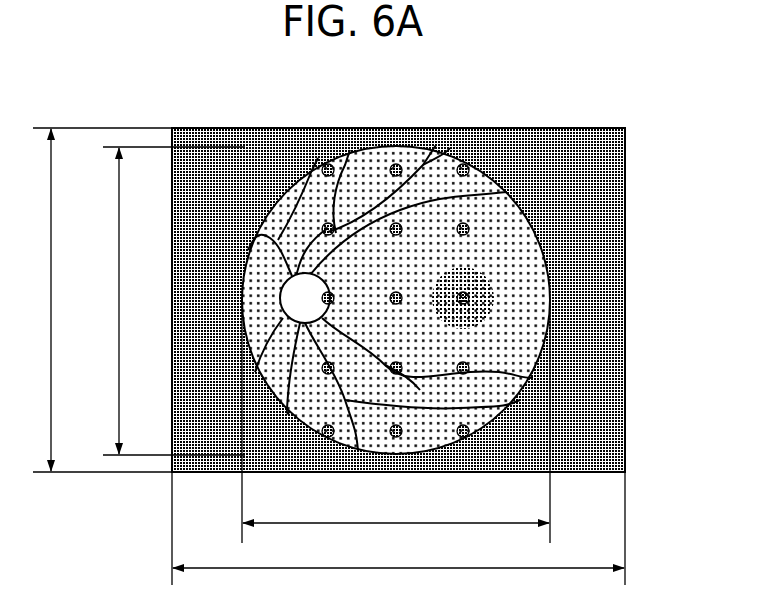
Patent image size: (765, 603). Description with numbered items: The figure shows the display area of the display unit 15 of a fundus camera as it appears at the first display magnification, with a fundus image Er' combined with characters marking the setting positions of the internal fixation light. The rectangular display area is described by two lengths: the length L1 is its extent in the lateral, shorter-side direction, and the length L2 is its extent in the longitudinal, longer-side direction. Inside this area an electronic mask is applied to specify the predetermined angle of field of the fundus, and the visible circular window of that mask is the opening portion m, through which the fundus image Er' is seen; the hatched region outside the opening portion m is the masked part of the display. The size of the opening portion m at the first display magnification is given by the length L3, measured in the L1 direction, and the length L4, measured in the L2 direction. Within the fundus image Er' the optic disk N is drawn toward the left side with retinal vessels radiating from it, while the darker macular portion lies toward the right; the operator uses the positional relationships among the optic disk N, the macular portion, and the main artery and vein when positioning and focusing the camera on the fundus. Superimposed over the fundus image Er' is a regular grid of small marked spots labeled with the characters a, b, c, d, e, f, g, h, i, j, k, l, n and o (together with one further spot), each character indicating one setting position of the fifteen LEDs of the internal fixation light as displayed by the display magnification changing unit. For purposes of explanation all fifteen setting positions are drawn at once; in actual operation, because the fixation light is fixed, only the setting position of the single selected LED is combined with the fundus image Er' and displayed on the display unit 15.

The display unit 15 is at (561, 128).
The opening portion m is at (494, 178).
The fundus image Er' is at (558, 280).
The optic disk N is at (292, 300).
The length L1 is at (94, 300).
The length L2 is at (398, 528).
The length L3 is at (165, 301).
The length L4 is at (396, 421).
The character a is at (332, 185).
The character b is at (396, 187).
The character c is at (467, 182).
The character d is at (331, 245).
The character e is at (396, 245).
The character f is at (464, 245).
The character g is at (333, 312).
The character h is at (397, 315).
The character i is at (463, 315).
The character j is at (328, 384).
The character k is at (396, 384).
The character l is at (463, 384).
The character n is at (397, 441).
The character o is at (465, 441).